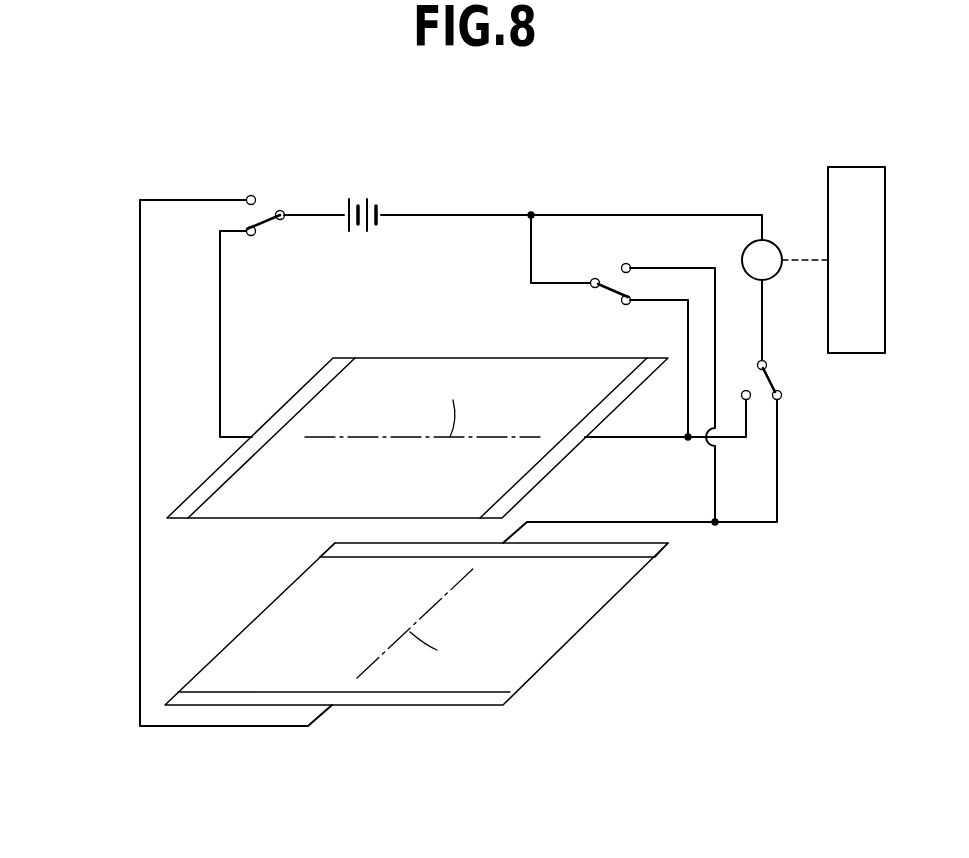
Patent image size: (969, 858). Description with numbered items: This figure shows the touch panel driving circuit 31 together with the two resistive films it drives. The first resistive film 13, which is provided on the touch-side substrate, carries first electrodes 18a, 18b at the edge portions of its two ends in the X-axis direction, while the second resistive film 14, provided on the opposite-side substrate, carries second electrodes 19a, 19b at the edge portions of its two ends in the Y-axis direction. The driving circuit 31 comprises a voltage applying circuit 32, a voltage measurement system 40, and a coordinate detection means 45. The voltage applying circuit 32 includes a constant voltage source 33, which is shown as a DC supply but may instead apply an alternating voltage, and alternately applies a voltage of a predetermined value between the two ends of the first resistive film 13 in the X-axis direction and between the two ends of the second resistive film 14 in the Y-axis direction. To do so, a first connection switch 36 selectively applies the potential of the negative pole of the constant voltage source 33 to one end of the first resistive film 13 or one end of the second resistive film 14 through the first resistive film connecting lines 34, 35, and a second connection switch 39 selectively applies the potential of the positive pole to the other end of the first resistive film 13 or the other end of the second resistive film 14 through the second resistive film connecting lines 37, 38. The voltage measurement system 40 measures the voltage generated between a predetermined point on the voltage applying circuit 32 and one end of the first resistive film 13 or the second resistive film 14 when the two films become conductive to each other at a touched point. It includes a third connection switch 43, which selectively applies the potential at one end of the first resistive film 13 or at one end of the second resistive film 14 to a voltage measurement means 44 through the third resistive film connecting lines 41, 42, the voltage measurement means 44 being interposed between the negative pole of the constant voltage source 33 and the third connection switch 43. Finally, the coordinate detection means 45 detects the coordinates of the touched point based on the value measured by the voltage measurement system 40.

The touch panel driving circuit 31 is at (128, 262).
The voltage applying circuit 32 is at (452, 214).
The constant voltage source 33 is at (360, 198).
The first resistive film connecting line 34 is at (712, 493).
The first resistive film connecting line 35 is at (688, 337).
The first connection switch 36 is at (612, 278).
The second resistive film connecting line 37 is at (140, 425).
The second resistive film connecting line 38 is at (220, 310).
The second connection switch 39 is at (262, 210).
The voltage measurement system 40 is at (665, 214).
The third resistive film connecting line 41 is at (748, 420).
The third resistive film connecting line 42 is at (777, 470).
The third connection switch 43 is at (771, 380).
The voltage measurement means 44 is at (772, 243).
The coordinate detection means 45 is at (863, 353).
The first resistive film 13 is at (375, 385).
The second resistive film 14 is at (555, 630).
The first electrode 18a is at (290, 405).
The first electrode 18b is at (555, 458).
The second electrode 19a is at (592, 552).
The second electrode 19b is at (460, 697).